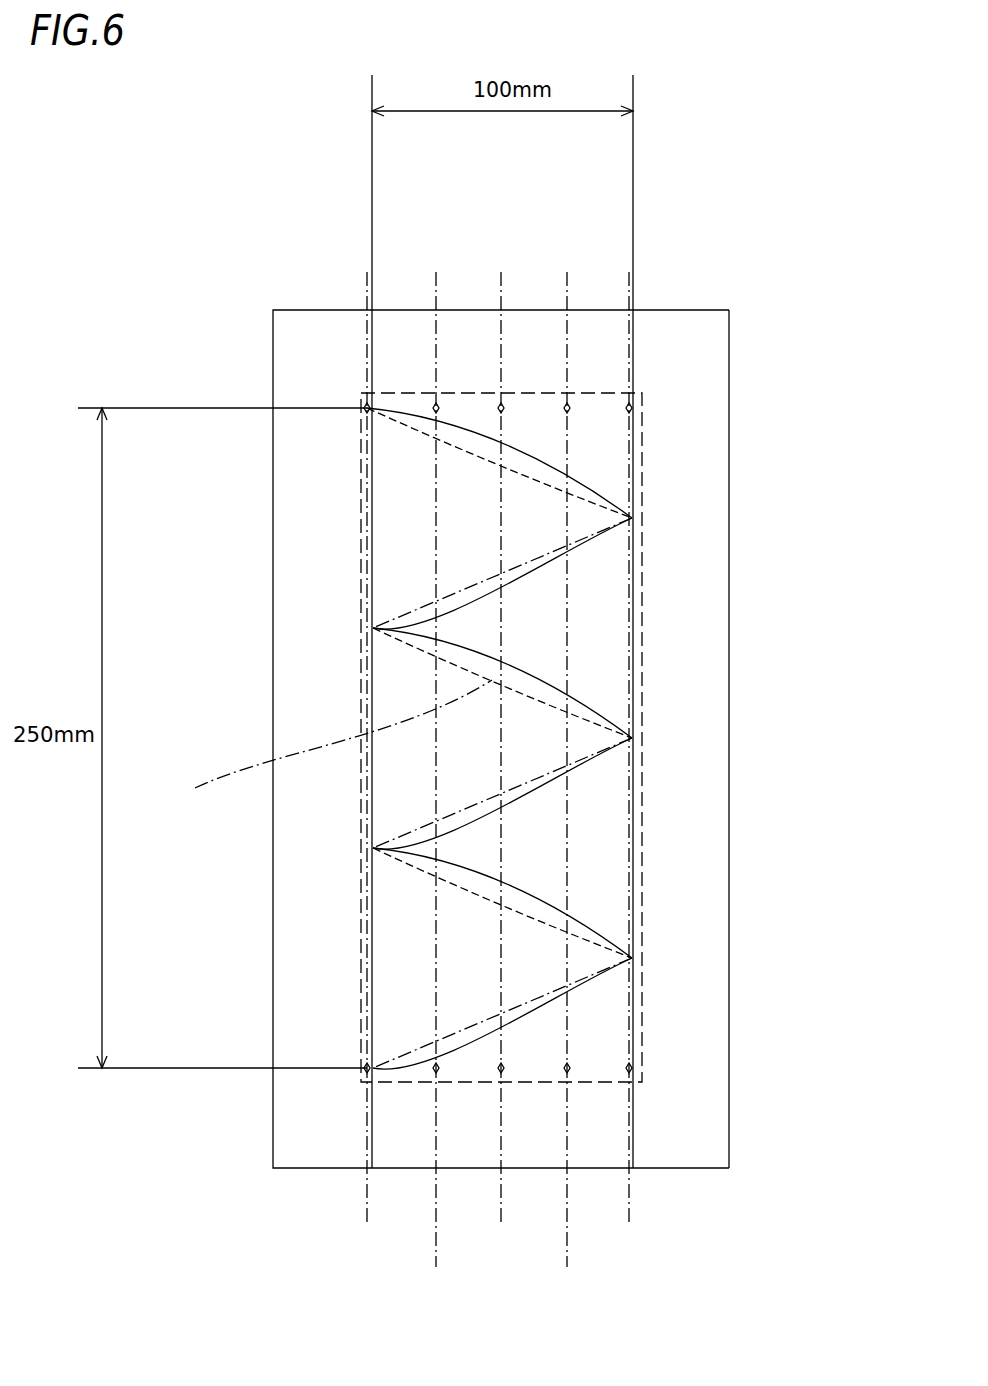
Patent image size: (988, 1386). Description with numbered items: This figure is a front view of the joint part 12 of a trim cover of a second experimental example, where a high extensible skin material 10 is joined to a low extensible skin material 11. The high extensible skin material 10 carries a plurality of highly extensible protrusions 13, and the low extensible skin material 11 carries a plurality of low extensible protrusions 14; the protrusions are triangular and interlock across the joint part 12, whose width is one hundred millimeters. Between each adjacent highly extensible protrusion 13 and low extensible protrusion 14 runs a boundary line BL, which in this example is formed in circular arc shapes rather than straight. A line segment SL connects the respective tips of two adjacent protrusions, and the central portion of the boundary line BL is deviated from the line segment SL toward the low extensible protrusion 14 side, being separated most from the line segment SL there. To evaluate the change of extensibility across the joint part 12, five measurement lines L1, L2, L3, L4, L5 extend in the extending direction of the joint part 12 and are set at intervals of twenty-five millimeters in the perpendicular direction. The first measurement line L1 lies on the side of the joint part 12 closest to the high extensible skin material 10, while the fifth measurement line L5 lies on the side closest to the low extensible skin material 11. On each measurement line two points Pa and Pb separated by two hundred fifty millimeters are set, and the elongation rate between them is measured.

The high extensible skin material 10 is at (297, 553).
The low extensible skin material 11 is at (703, 943).
The joint part 12 is at (648, 1000).
The highly extensible protrusion 13 is at (513, 527).
The low extensible protrusion 14 is at (480, 630).
The measurement point Pa is at (633, 408).
The measurement point Pb is at (629, 1068).
The boundary line BL is at (560, 688).
The line segment SL is at (326, 745).
The first measurement line L1 is at (370, 765).
The second measurement line L2 is at (442, 792).
The third measurement line L3 is at (502, 765).
The fourth measurement line L4 is at (569, 792).
The fifth measurement line L5 is at (635, 765).